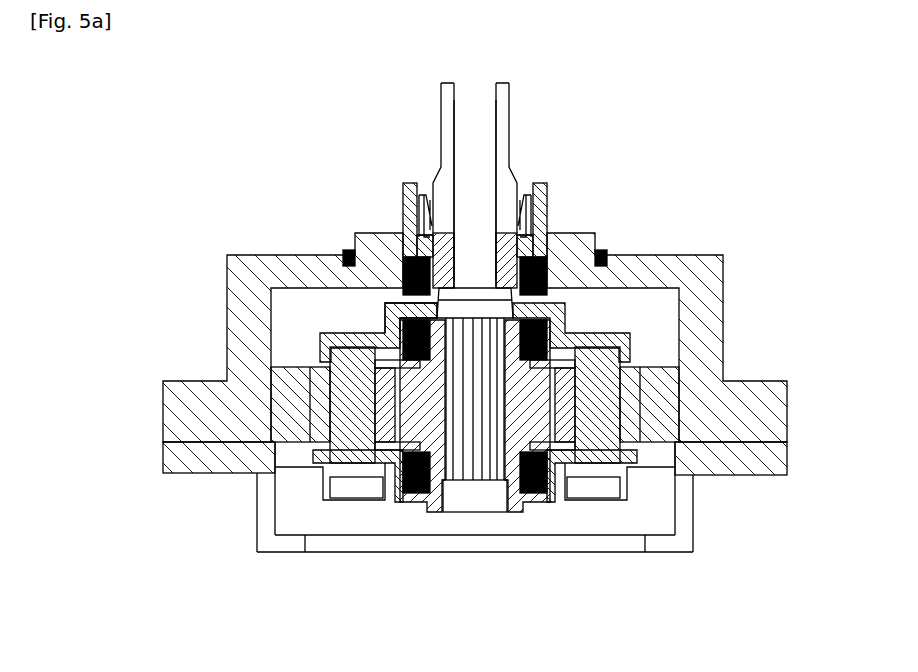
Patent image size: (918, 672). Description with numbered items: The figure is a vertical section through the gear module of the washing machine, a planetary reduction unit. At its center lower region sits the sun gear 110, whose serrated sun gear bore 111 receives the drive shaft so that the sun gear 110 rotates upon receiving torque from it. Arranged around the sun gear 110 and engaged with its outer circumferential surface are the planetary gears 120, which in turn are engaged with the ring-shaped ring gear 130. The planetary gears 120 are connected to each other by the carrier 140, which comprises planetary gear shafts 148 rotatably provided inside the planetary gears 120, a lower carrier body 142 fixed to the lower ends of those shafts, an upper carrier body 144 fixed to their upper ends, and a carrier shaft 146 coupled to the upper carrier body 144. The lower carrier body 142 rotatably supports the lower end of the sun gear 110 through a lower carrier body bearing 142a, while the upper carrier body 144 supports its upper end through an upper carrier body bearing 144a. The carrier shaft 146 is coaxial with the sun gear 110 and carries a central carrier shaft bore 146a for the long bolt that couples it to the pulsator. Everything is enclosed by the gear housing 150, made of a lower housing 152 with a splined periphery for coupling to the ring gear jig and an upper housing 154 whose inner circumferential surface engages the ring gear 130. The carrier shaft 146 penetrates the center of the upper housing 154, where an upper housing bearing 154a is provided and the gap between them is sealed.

The sun gear 110 is at (498, 360).
The sun gear bore 111 is at (465, 450).
The planetary gears 120 is at (640, 370).
The ring gear 130 is at (673, 420).
The carrier 140 is at (428, 357).
The lower carrier body 142 is at (350, 458).
The lower carrier body bearing 142a is at (405, 495).
The upper carrier body 144 is at (380, 315).
The upper carrier body bearing 144a is at (557, 307).
The carrier shaft 146 is at (443, 214).
The carrier shaft bore 146a is at (473, 140).
The planetary gear shafts 148 is at (347, 393).
The gear housing 150 is at (397, 538).
The lower housing 152 is at (247, 462).
The upper housing 154 is at (187, 452).
The upper housing bearing 154a is at (537, 262).